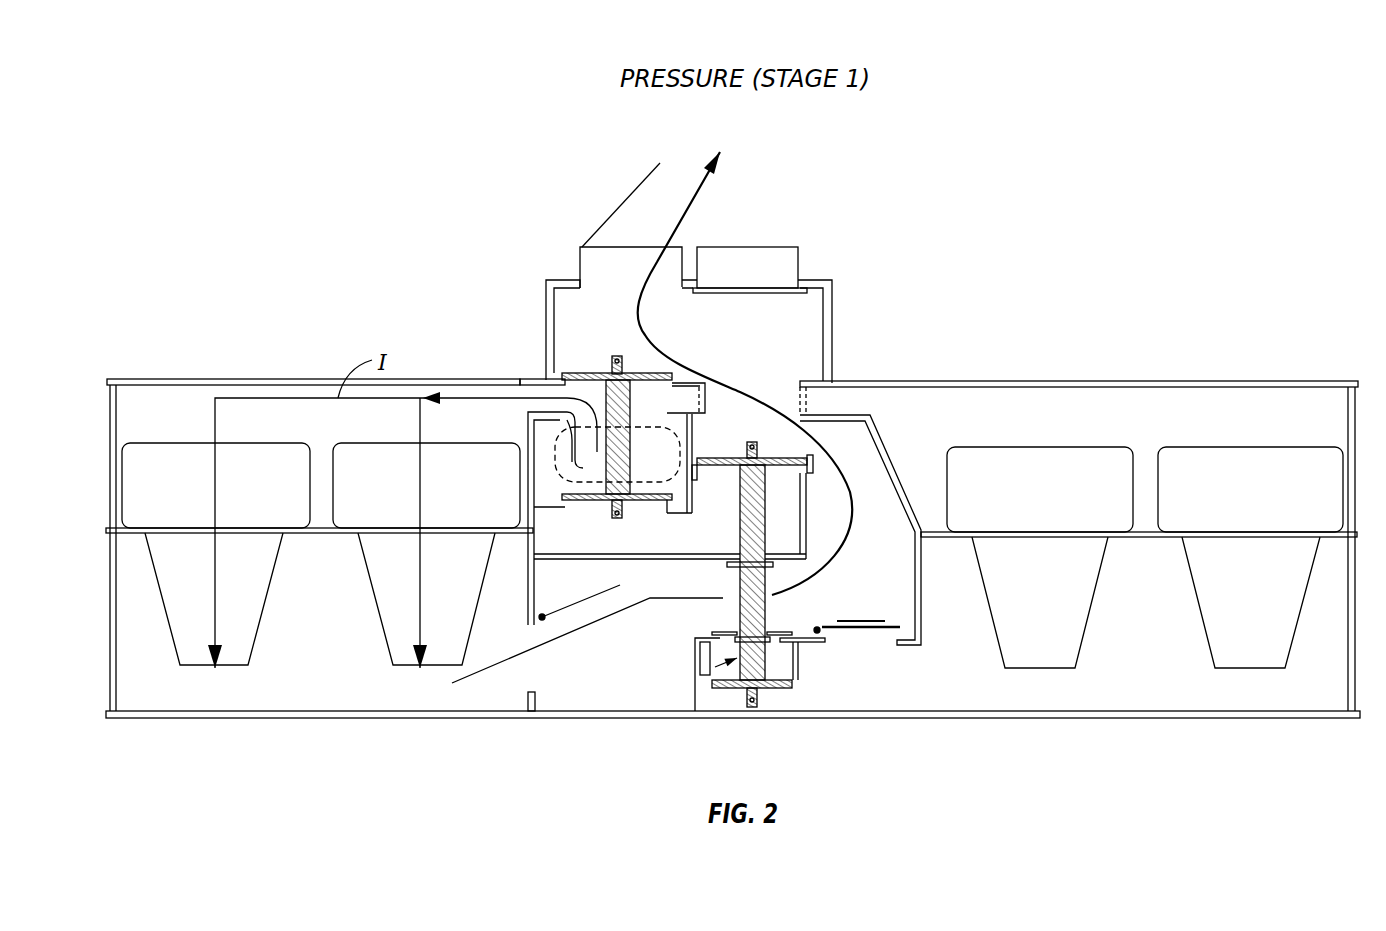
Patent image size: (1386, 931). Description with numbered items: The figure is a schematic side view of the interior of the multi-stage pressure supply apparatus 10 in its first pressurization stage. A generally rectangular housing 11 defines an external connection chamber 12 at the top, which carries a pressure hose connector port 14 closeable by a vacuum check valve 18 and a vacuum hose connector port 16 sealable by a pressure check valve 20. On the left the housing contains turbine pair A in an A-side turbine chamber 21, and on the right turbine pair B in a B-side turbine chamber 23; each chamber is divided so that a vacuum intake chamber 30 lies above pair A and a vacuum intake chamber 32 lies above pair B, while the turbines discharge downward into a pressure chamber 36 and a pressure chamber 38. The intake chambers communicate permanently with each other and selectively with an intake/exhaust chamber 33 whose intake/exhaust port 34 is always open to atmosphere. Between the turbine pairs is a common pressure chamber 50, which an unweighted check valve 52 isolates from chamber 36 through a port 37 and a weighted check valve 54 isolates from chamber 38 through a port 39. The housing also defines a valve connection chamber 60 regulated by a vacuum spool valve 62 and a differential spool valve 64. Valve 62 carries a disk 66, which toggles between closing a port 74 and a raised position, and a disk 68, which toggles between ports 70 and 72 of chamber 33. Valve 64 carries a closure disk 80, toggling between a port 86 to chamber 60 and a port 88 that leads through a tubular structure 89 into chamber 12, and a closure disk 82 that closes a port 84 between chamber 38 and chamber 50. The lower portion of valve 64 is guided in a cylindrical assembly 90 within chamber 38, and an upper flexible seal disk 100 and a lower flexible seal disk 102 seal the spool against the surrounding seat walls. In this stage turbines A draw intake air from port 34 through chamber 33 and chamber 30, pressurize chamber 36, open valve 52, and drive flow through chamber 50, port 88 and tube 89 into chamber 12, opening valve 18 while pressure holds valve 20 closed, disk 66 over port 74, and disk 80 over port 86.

The apparatus 10 is at (952, 312).
The housing 11 is at (985, 382).
The external connection chamber 12 is at (689, 331).
The pressure hose connector port 14 is at (585, 262).
The vacuum hose connector port 16 is at (797, 262).
The vacuum check valve 18 is at (612, 208).
The pressure check valve 20 is at (760, 293).
The A-side turbine chamber 21 is at (163, 400).
The B-side turbine chamber 23 is at (1295, 393).
The vacuum intake chamber 30 is at (321, 469).
The vacuum intake chamber 32 is at (1145, 472).
The intake/exhaust chamber 33 is at (671, 448).
The intake/exhaust port 34 is at (677, 443).
The pressure chamber 36 is at (320, 617).
The port 37 is at (533, 690).
The pressure chamber 38 is at (1146, 621).
The port 39 is at (893, 642).
The common pressure chamber 50 is at (673, 598).
The check valve 52 is at (600, 593).
The check valve 54 is at (858, 620).
The valve connection chamber 60 is at (667, 518).
The vacuum spool valve 62 is at (606, 402).
The differential spool valve 64 is at (715, 667).
The disk 66 is at (648, 372).
The disk 68 is at (662, 517).
The port 70 is at (567, 507).
The port 72 is at (586, 451).
The port 74 is at (550, 360).
The closure disk 80 is at (765, 458).
The closure disk 82 is at (773, 688).
The port 84 is at (785, 637).
The port 86 is at (700, 467).
The port 88 is at (708, 412).
The tubular structure 89 is at (810, 392).
The cylindrical assembly 90 is at (797, 668).
The upper flexible seal disk 100 is at (733, 568).
The lower flexible seal disk 102 is at (720, 632).